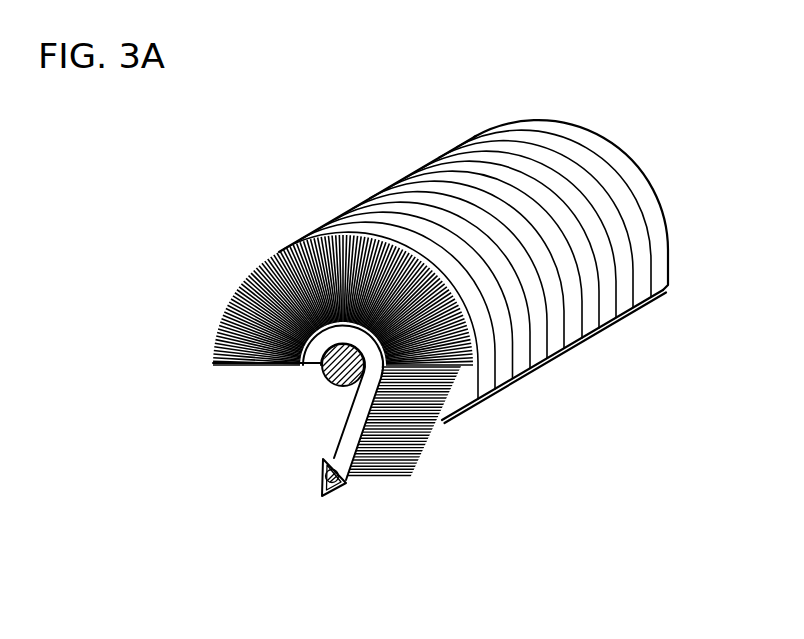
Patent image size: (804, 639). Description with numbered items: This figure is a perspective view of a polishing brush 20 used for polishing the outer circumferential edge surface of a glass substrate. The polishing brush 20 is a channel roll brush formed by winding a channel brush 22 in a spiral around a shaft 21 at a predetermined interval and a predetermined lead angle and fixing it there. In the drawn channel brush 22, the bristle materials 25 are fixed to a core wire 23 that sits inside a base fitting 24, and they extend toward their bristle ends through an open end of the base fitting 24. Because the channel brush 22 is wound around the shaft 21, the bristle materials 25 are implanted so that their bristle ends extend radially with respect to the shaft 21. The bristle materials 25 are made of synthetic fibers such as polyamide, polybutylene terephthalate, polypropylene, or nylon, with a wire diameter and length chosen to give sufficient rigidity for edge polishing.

The polishing brush 20 is at (440, 379).
The shaft 21 is at (331, 377).
The channel brush 22 is at (332, 458).
The core wire 23 is at (328, 505).
The base fitting 24 is at (335, 445).
The bristle materials 25 is at (384, 478).